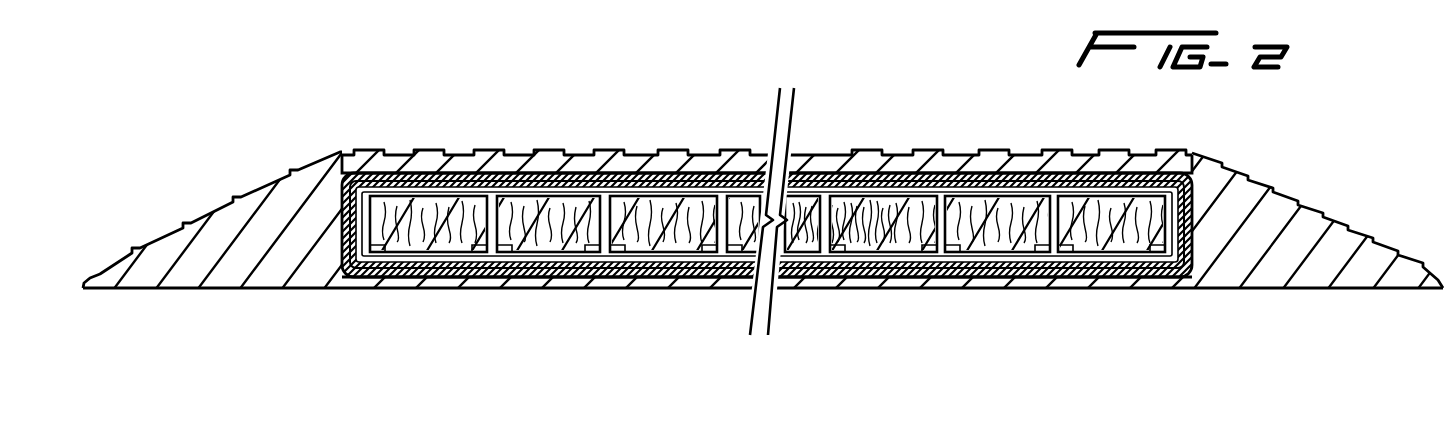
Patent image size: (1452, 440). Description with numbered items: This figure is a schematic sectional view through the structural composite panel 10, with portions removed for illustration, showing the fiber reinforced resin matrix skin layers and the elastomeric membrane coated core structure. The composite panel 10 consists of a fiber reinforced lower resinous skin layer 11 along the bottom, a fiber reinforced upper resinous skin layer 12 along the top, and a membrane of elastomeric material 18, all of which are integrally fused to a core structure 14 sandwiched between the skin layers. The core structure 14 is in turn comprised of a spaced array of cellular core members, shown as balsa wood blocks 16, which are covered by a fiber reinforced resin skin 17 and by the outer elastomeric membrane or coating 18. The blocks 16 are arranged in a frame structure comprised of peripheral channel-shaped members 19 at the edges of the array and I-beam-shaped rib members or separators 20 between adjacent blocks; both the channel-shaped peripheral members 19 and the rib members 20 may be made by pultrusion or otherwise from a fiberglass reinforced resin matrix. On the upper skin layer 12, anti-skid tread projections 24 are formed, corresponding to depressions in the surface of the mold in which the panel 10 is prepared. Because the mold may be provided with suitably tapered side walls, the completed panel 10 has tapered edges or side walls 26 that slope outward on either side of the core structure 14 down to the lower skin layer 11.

The structural composite panel 10 is at (767, 197).
The lower resinous skin layer 11 is at (712, 283).
The upper resinous skin layer 12 is at (462, 162).
The core structure 14 is at (1002, 253).
The balsa wood blocks 16 is at (637, 273).
The fiber reinforced resin skin 17 is at (530, 270).
The elastomeric membrane 18 is at (443, 278).
The peripheral channel-shaped members 19 is at (385, 276).
The I-beam-shaped rib members 20 is at (611, 192).
The anti-skid tread projections 24 is at (993, 152).
The tapered edges 26 is at (227, 207).